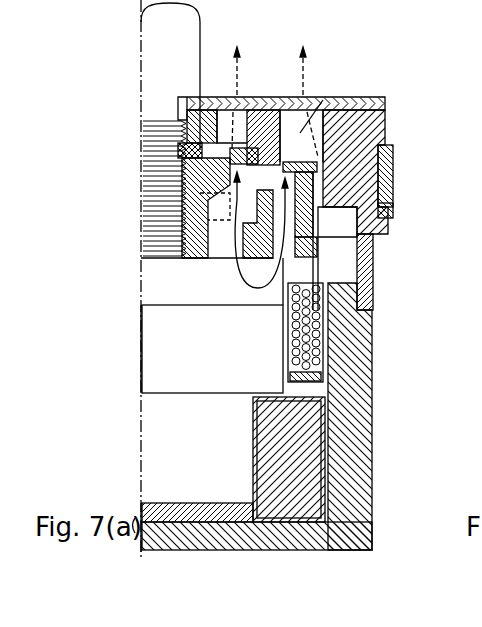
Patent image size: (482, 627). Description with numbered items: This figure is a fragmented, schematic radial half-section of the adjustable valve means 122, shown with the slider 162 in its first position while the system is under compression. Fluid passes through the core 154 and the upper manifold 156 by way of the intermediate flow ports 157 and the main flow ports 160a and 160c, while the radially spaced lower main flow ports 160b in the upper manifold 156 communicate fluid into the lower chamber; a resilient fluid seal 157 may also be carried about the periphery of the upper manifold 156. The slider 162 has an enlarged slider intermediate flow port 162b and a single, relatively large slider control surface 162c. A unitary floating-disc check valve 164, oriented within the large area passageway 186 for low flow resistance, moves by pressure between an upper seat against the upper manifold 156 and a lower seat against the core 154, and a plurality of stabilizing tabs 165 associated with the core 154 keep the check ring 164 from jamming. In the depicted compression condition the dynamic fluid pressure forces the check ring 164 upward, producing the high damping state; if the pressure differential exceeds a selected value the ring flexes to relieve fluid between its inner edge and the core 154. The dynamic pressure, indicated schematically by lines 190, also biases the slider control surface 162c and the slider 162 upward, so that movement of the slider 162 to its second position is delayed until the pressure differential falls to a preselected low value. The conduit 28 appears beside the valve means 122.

The conduit 28 is at (182, 57).
The adjustable valve means 122 is at (382, 458).
The core 154 is at (182, 258).
The upper manifold 156 is at (373, 123).
The intermediate flow ports 157 is at (222, 247).
The main flow port 160a is at (228, 140).
The lower main flow ports 160b is at (332, 270).
The main flow port 160c is at (310, 130).
The slider 162 is at (320, 210).
The slider intermediate flow port 162b is at (318, 240).
The slider control surface 162c is at (390, 204).
The check valve 164 is at (205, 133).
The stabilizing tabs 165 is at (200, 157).
The passageway 186 is at (312, 133).
The dynamic fluid pressure lines 190 is at (373, 255).